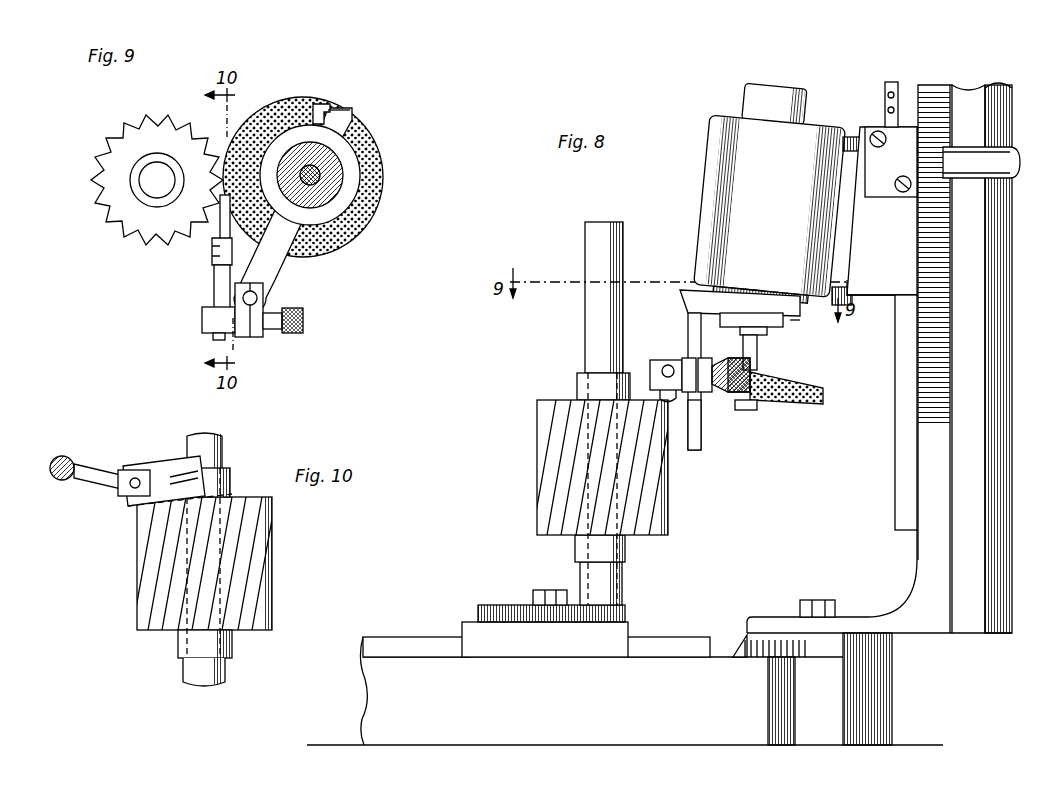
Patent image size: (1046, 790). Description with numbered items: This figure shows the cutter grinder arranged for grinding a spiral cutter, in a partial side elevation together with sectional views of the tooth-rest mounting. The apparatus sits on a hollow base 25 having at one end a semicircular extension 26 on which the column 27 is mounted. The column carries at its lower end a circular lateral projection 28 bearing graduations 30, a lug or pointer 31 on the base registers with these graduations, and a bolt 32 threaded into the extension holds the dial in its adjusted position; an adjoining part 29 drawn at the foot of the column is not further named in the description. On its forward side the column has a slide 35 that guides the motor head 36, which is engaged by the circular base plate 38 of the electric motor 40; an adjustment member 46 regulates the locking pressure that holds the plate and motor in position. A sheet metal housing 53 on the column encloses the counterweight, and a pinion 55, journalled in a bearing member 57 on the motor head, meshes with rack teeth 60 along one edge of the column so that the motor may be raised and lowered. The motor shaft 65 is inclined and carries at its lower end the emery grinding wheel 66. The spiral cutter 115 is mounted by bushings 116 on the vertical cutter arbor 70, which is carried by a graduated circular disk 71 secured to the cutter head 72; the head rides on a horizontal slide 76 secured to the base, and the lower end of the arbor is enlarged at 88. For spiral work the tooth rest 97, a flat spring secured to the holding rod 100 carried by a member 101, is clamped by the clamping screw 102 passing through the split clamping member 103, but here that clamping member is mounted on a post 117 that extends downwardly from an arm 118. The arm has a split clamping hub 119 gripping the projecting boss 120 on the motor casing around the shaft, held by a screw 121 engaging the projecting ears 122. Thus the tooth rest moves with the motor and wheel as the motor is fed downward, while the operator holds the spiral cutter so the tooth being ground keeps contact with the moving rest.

In FIG. 8, the hollow base 25 is at (385, 698).
In FIG. 8, the semicircular extension 26 is at (885, 705).
In FIG. 8, the column 27 is at (948, 633).
In FIG. 8, the lateral projection 28 is at (855, 625).
In FIG. 8, the base block 29 is at (852, 645).
In FIG. 8, the graduations 30 is at (758, 645).
In FIG. 8, the lug or pointer 31 is at (740, 654).
In FIG. 8, the bolt or stud 32 is at (818, 600).
In FIG. 8, the slide 35 is at (903, 409).
In FIG. 8, the motor head 36 is at (882, 296).
In FIG. 8, the circular base plate 38 is at (853, 213).
In FIG. 8, the electric motor 40 is at (712, 130).
In FIG. 8, the adjustment member 46 is at (885, 97).
In FIG. 8, the sheet metal housing 53 is at (1000, 100).
In FIG. 8, the pinion 55 is at (940, 176).
In FIG. 8, the bearing member 57 is at (876, 140).
In FIG. 8, the rack teeth 60 is at (935, 100).
In FIG. 8, the motor shaft 65 is at (757, 348).
In FIG. 9, the emery grinding wheel 66 is at (350, 226).
In FIG. 8, the emery grinding wheel 66 is at (812, 392).
In FIG. 9, the cutter arbor 70 is at (155, 194).
In FIG. 10, the cutter arbor 70 is at (222, 450).
In FIG. 8, the cutter arbor 70 is at (592, 240).
In FIG. 8, the circular disk 71 is at (502, 612).
In FIG. 8, the cutter head 72 is at (470, 630).
In FIG. 8, the horizontal slide 76 is at (393, 638).
In FIG. 10, the enlarged lower end of arbor 88 is at (225, 676).
In FIG. 9, the tooth rest 97 is at (218, 230).
In FIG. 10, the tooth rest 97 is at (158, 466).
In FIG. 8, the tooth rest 97 is at (688, 410).
In FIG. 9, the holding rod 100 is at (216, 289).
In FIG. 10, the holding rod 100 is at (100, 466).
In FIG. 9, the member 101 is at (206, 322).
In FIG. 10, the member 101 is at (62, 480).
In FIG. 8, the member 101 is at (658, 360).
In FIG. 9, the clamping screw 102 is at (305, 322).
In FIG. 8, the clamping screw 102 is at (748, 403).
In FIG. 9, the split clamping member 103 is at (260, 330).
In FIG. 8, the split clamping member 103 is at (703, 370).
In FIG. 9, the spiral cutter 115 is at (169, 120).
In FIG. 10, the spiral cutter 115 is at (272, 542).
In FIG. 8, the spiral cutter 115 is at (545, 422).
In FIG. 9, the bushings 116 is at (137, 196).
In FIG. 10, the bushings 116 is at (230, 481).
In FIG. 8, the bushings 116 is at (583, 384).
In FIG. 9, the post 117 is at (262, 296).
In FIG. 8, the post 117 is at (690, 336).
In FIG. 9, the arm 118 is at (282, 258).
In FIG. 8, the arm 118 is at (705, 302).
In FIG. 9, the split clamping hub 119 is at (343, 181).
In FIG. 9, the projecting boss 120 is at (320, 182).
In FIG. 8, the projecting boss 120 is at (795, 323).
In FIG. 9, the screw 121 is at (320, 104).
In FIG. 9, the projecting ears 122 is at (342, 112).